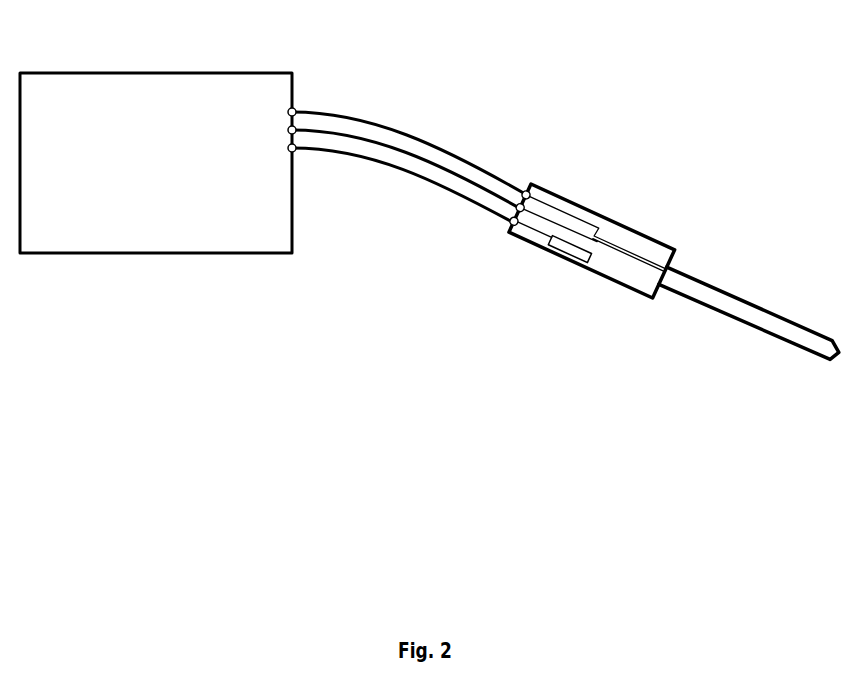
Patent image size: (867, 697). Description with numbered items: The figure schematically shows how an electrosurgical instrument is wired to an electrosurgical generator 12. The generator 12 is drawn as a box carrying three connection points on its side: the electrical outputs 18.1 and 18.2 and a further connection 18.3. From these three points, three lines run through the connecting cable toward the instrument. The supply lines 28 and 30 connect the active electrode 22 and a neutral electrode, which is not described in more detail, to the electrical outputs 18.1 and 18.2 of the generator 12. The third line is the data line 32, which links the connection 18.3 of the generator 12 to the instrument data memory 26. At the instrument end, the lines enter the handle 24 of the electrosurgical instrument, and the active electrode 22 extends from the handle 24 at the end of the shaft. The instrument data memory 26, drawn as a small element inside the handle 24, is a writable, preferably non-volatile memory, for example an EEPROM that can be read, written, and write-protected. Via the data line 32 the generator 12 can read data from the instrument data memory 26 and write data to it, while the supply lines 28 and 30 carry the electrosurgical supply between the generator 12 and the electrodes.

The electrosurgical generator 12 is at (180, 232).
The electrical output 18.1 is at (296, 108).
The electrical output 18.2 is at (296, 127).
The connection 18.3 is at (296, 151).
The active electrode 22 is at (702, 292).
The handle 24 is at (635, 240).
The instrument data memory 26 is at (567, 250).
The supply line 28 is at (425, 160).
The supply line 30 is at (470, 163).
The data line 32 is at (423, 175).